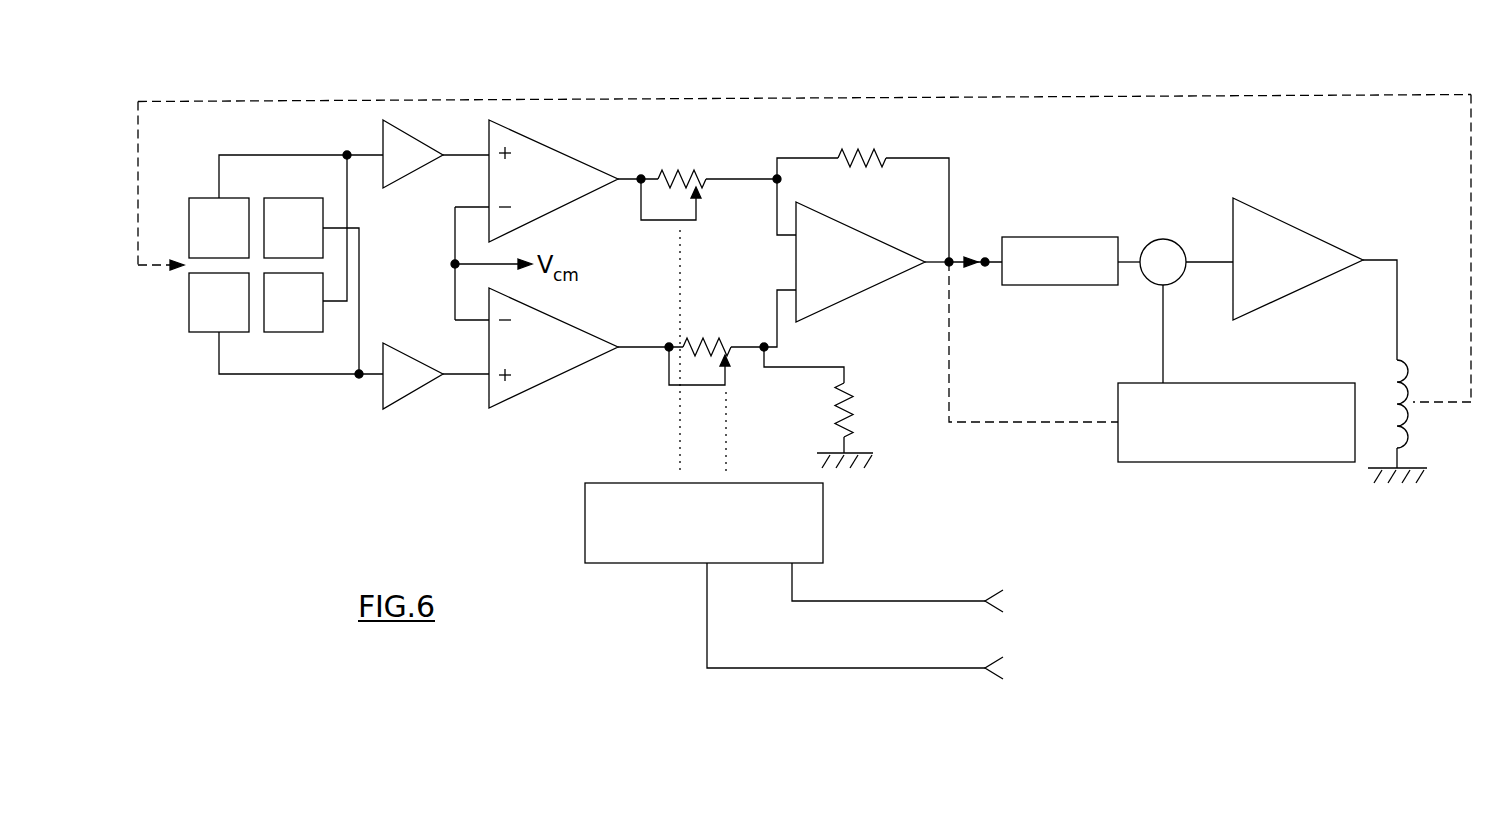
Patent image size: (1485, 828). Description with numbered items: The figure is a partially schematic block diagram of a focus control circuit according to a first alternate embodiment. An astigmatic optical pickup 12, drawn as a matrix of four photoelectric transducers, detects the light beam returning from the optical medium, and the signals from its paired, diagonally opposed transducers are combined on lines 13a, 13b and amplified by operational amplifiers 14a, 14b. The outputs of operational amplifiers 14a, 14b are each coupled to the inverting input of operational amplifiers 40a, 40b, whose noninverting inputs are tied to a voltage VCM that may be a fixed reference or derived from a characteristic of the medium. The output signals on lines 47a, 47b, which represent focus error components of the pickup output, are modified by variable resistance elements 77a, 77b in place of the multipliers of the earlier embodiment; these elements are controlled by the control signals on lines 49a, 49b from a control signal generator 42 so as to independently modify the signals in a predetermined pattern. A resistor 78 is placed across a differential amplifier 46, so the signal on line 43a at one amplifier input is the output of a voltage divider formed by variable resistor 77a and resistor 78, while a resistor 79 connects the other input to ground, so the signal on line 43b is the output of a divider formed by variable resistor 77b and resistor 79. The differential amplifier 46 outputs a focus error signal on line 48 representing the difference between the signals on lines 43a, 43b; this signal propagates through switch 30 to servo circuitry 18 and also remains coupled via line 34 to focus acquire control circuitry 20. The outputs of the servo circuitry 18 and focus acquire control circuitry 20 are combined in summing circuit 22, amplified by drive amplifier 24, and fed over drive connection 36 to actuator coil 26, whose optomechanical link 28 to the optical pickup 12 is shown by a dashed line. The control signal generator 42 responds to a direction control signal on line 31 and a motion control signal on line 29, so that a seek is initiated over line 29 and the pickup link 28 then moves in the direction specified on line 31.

The optical pickup 12 is at (208, 370).
The line 13a is at (347, 152).
The line 13b is at (378, 378).
The operational amplifier 14a is at (398, 143).
The operational amplifier 14b is at (402, 357).
The operational amplifier 40a is at (545, 213).
The operational amplifier 40b is at (523, 393).
The line 47a is at (630, 173).
The line 47b is at (660, 345).
The variable resistance element 77a is at (677, 167).
The variable resistance element 77b is at (690, 338).
The line 43a is at (772, 182).
The line 43b is at (777, 292).
The line 49a is at (678, 462).
The line 49b is at (745, 415).
The resistor 78 is at (868, 148).
The differential amplifier 46 is at (825, 235).
The line 48 is at (935, 267).
The resistor 79 is at (855, 412).
The switch 30 is at (960, 255).
The servo circuitry 18 is at (1080, 287).
The summing circuit 22 is at (1158, 240).
The drive amplifier 24 is at (1278, 233).
The drive line 36 is at (1398, 302).
The actuator coil 26 is at (1412, 425).
The optomechanical link 28 is at (1318, 96).
The line 34 is at (980, 425).
The focus acquire control circuitry 20 is at (1153, 463).
The control signal generator 42 is at (615, 565).
The line 31 is at (848, 600).
The line 29 is at (795, 672).